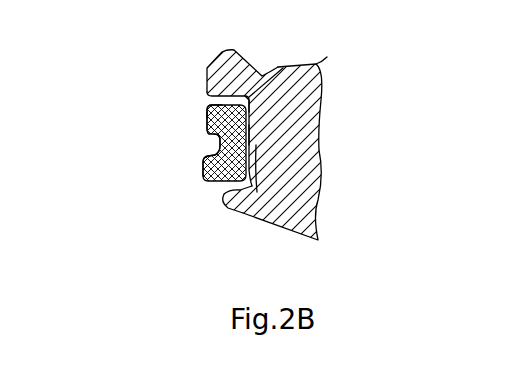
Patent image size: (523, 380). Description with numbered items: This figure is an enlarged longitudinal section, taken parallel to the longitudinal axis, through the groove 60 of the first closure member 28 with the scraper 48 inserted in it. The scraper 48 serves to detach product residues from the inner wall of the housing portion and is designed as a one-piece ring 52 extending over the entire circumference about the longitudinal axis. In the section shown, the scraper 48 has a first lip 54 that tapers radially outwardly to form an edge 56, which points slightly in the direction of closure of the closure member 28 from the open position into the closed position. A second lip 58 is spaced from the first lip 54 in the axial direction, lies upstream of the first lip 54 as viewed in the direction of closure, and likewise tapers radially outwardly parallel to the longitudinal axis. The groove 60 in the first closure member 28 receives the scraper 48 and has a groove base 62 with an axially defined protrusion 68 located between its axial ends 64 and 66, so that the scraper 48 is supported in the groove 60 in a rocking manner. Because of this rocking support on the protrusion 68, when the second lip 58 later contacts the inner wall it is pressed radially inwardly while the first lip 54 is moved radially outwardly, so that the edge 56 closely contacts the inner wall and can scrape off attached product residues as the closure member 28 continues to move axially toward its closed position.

The first closure member 28 is at (290, 205).
The scraper 48 is at (214, 139).
The one-piece ring 52 is at (247, 183).
The first lip 54 is at (207, 109).
The edge 56 is at (207, 117).
The second lip 58 is at (208, 166).
The groove 60 is at (258, 133).
The groove base 62 is at (256, 105).
The axial end 64 is at (242, 96).
The axial end 66 is at (258, 190).
The protrusion 68 is at (248, 141).